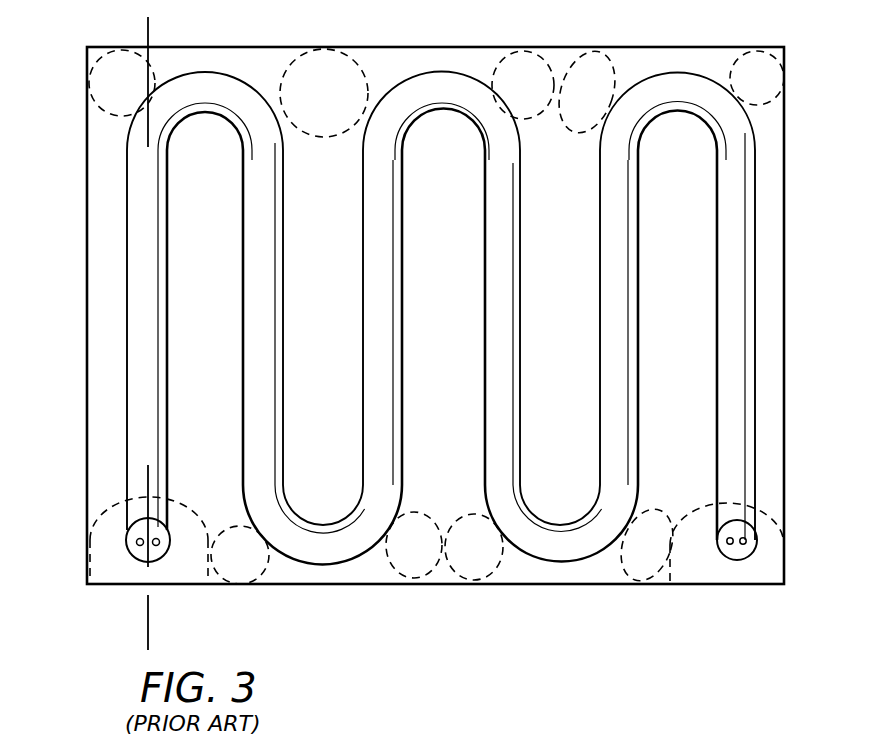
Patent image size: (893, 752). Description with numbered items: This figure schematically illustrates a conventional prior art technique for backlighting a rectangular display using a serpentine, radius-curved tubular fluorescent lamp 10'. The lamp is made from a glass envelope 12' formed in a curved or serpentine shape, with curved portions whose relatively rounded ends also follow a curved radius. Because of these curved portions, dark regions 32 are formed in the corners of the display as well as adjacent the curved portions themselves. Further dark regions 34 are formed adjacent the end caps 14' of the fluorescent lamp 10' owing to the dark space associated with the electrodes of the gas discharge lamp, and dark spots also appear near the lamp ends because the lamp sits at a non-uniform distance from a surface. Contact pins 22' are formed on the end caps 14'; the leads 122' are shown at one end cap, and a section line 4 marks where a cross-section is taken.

The fluorescent lamp 10' is at (435, 315).
The glass envelope 12' is at (441, 318).
The end caps 14' is at (414, 575).
The contact pins 22' is at (718, 588).
The dark regions 32 is at (108, 86).
The dark regions 34 is at (92, 520).
The lead wires 122' is at (185, 495).
The section line 4- 4 is at (175, 27).